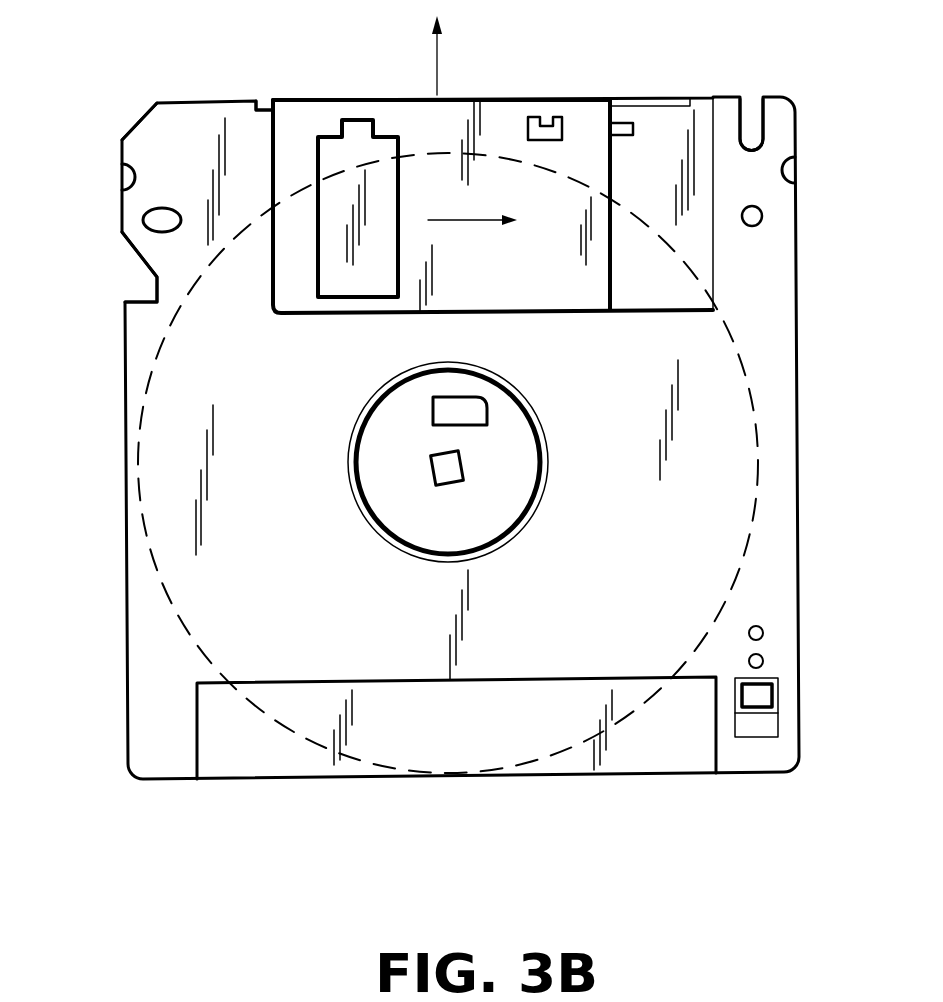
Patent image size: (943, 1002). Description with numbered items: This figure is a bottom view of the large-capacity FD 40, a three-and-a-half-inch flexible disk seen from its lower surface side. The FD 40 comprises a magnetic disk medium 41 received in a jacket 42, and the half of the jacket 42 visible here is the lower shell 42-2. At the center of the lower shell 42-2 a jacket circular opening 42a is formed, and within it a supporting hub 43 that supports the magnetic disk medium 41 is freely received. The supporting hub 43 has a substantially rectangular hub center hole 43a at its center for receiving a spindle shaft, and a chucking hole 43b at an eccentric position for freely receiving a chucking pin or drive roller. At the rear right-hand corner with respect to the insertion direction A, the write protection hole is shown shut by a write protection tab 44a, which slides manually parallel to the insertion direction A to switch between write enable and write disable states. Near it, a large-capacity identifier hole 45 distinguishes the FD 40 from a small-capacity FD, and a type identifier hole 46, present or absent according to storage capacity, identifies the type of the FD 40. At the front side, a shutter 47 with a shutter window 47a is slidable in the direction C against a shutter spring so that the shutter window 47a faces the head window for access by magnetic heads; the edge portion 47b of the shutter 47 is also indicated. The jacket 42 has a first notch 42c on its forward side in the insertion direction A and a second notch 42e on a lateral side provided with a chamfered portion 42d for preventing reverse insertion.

The large-capacity FD 40 is at (806, 411).
The magnetic disk medium 41 is at (750, 530).
The jacket 42 is at (772, 283).
The lower shell 42-2 is at (798, 355).
The jacket circular opening 42a is at (538, 497).
The first notch 42c is at (753, 100).
The chamfered portion 42d is at (137, 127).
The second notch 42e is at (140, 290).
The supporting hub 43 is at (507, 440).
The hub center hole 43a is at (445, 478).
The chucking hole 43b is at (465, 407).
The write protection tab 44a is at (760, 693).
The large-capacity identifier hole 45 is at (763, 657).
The type identifier hole 46 is at (748, 640).
The shutter 47 is at (318, 117).
The shutter window 47a is at (348, 300).
The shutter edge step 47b is at (273, 100).
The insertion direction A is at (437, 67).
The shutter sliding direction C is at (465, 222).